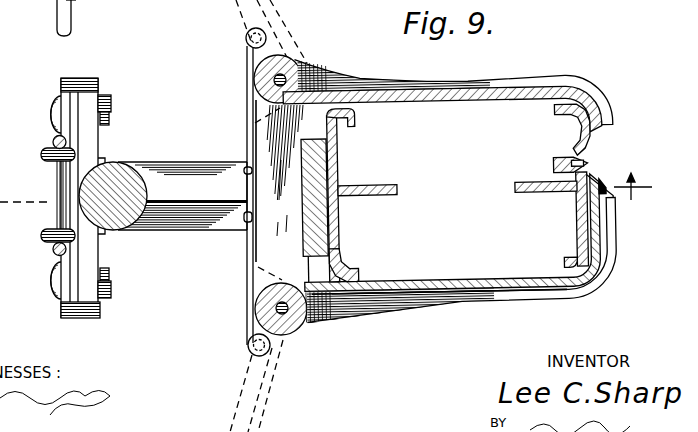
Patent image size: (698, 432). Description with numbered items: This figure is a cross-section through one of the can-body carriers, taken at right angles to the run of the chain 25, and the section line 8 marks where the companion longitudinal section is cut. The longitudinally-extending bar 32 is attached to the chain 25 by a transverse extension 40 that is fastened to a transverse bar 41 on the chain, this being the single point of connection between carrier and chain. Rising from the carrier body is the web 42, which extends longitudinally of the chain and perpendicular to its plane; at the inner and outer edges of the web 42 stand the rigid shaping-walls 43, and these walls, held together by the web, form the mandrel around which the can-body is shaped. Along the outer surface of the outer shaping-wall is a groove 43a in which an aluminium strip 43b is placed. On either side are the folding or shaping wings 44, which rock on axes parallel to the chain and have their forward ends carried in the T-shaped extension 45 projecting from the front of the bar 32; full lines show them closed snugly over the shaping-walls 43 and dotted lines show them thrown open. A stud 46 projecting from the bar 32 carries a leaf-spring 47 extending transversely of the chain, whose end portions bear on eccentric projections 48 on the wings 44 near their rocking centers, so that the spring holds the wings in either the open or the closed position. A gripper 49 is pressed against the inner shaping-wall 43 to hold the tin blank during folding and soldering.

The section line 8 is at (641, 187).
The chain 25 is at (56, 173).
The longitudinally-extending bar 32 is at (127, 223).
The transverse extension 40 is at (92, 142).
The transverse bar 41 is at (74, 86).
The web 42 is at (383, 197).
The shaping-wall 43 is at (341, 248).
The groove 43a is at (588, 157).
The aluminium strip 43b is at (589, 163).
The folding or shaping wing 44 is at (492, 88).
The T-shaped extension 45 is at (200, 221).
The stud 46 is at (174, 192).
The leaf-spring 47 is at (247, 133).
The eccentric projection 48 is at (258, 46).
The gripper 49 is at (315, 137).